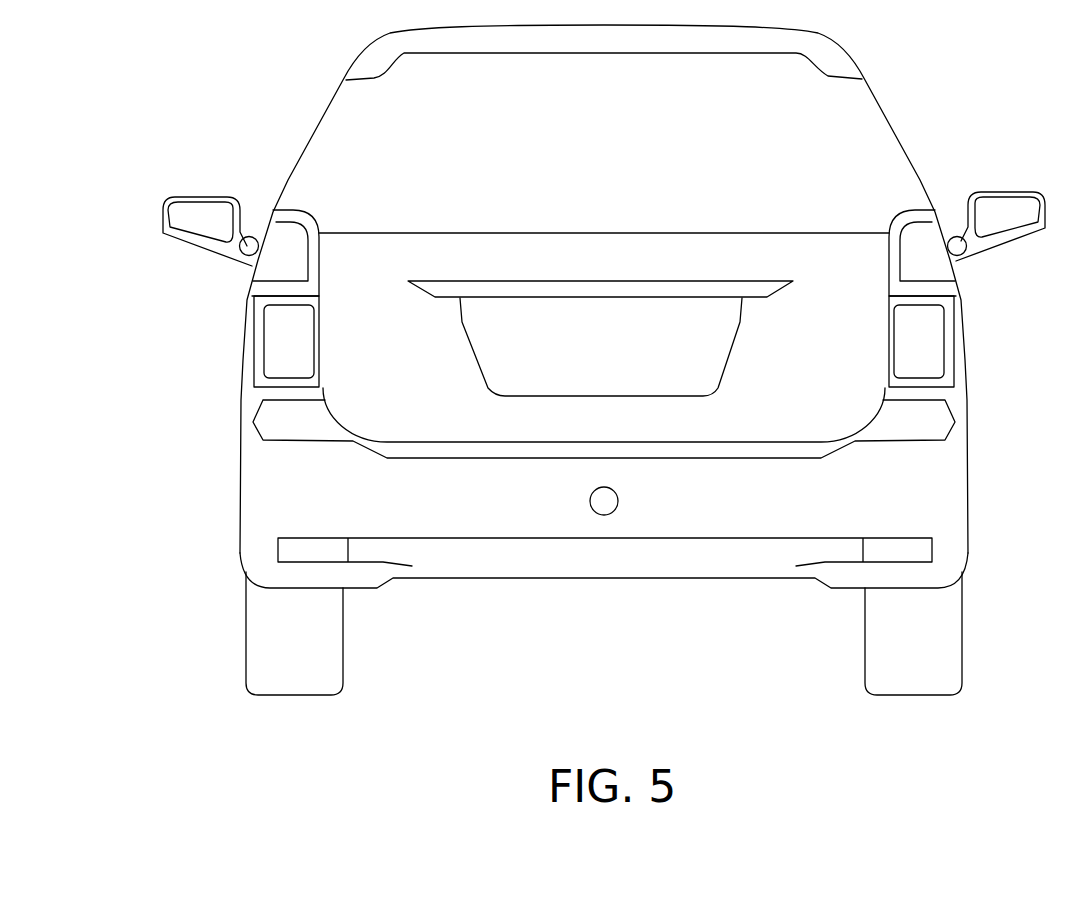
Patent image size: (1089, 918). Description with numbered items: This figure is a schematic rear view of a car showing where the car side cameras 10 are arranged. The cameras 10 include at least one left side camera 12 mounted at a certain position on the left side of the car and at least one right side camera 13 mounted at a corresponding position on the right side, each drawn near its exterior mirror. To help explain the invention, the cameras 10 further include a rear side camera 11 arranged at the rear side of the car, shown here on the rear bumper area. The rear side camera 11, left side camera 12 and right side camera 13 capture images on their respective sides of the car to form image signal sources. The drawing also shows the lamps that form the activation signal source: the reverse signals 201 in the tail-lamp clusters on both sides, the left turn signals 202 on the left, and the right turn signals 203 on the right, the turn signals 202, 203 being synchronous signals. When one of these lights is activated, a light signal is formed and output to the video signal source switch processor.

The car side cameras 10 is at (620, 387).
The rear side camera 11 is at (608, 505).
The left side camera 12 is at (252, 236).
The right side camera 13 is at (952, 236).
The reverse signals 201 is at (285, 352).
The left turn signals 202 is at (273, 270).
The right turn signals 203 is at (928, 268).